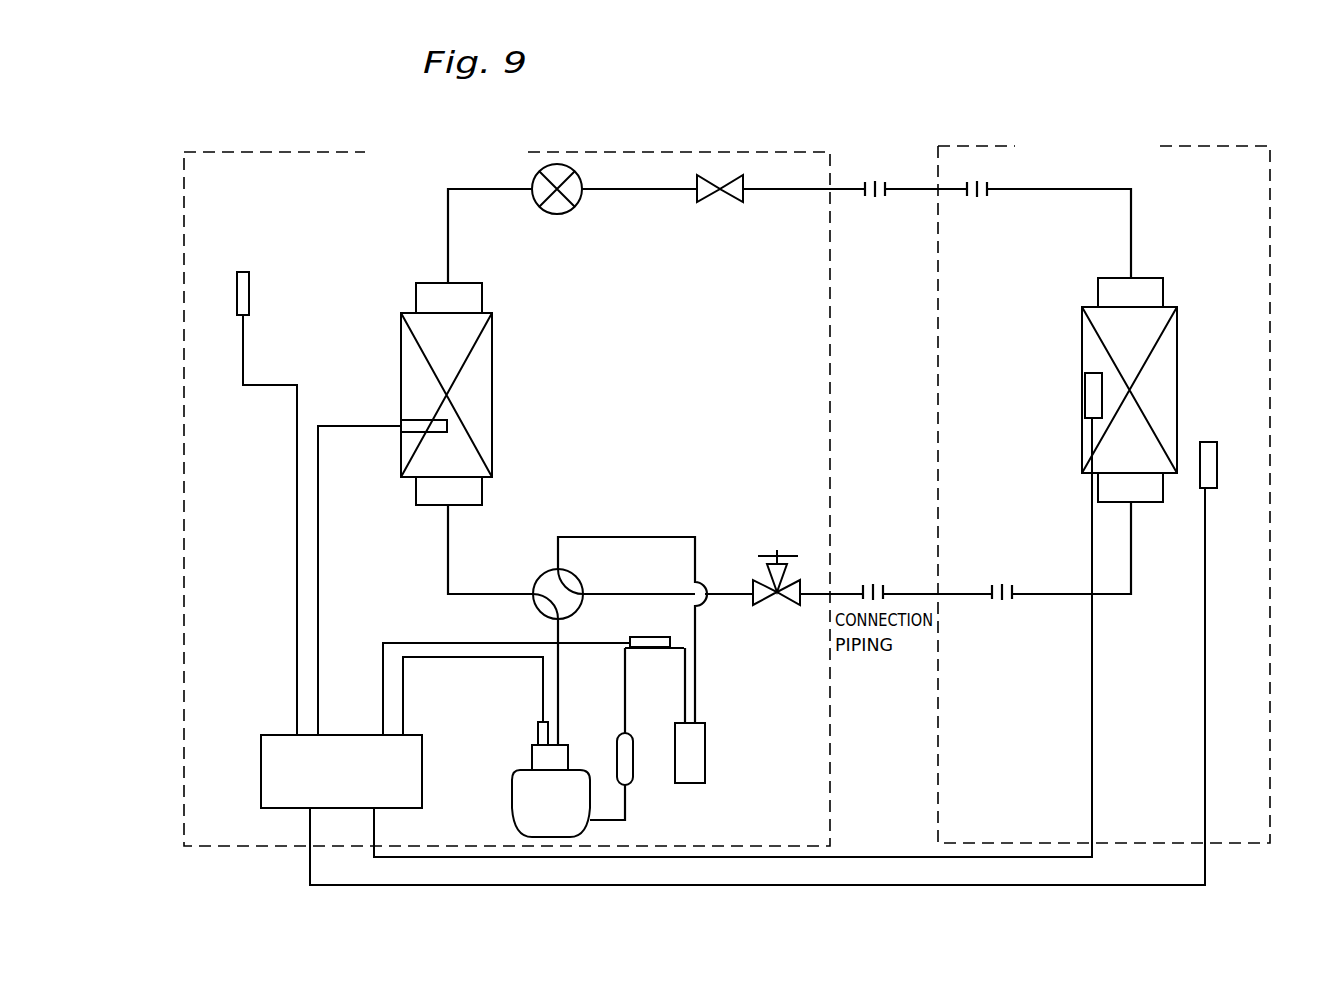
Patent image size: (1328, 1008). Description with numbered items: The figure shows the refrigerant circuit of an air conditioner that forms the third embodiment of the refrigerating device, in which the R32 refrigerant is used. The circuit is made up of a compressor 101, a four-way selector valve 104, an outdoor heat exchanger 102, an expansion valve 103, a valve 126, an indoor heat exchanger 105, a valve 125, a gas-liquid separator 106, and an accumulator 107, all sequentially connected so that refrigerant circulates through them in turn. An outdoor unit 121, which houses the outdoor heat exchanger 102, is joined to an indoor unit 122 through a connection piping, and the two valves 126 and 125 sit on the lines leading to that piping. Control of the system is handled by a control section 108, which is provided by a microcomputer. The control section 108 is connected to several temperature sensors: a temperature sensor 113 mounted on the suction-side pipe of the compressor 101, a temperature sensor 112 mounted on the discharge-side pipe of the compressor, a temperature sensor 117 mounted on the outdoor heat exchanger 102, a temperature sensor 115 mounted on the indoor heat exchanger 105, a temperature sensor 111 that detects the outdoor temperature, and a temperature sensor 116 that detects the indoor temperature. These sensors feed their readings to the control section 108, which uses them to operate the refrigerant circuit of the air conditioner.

The compressor 101 is at (512, 788).
The outdoor heat exchanger 102 is at (401, 324).
The expansion valve 103 is at (553, 214).
The four-way selector valve 104 is at (582, 578).
The indoor heat exchanger 105 is at (1177, 345).
The gas-liquid separator 106 is at (705, 749).
The accumulator 107 is at (633, 770).
The control section 108 is at (261, 770).
The temperature sensor 111 is at (243, 272).
The temperature sensor 112 is at (538, 731).
The temperature sensor 113 is at (651, 650).
The temperature sensor 115 is at (1085, 390).
The temperature sensor 116 is at (1208, 442).
The temperature sensor 117 is at (402, 437).
The outdoor unit 121 is at (316, 150).
The indoor unit 122 is at (1271, 312).
The valve 125 is at (773, 607).
The valve 126 is at (711, 205).